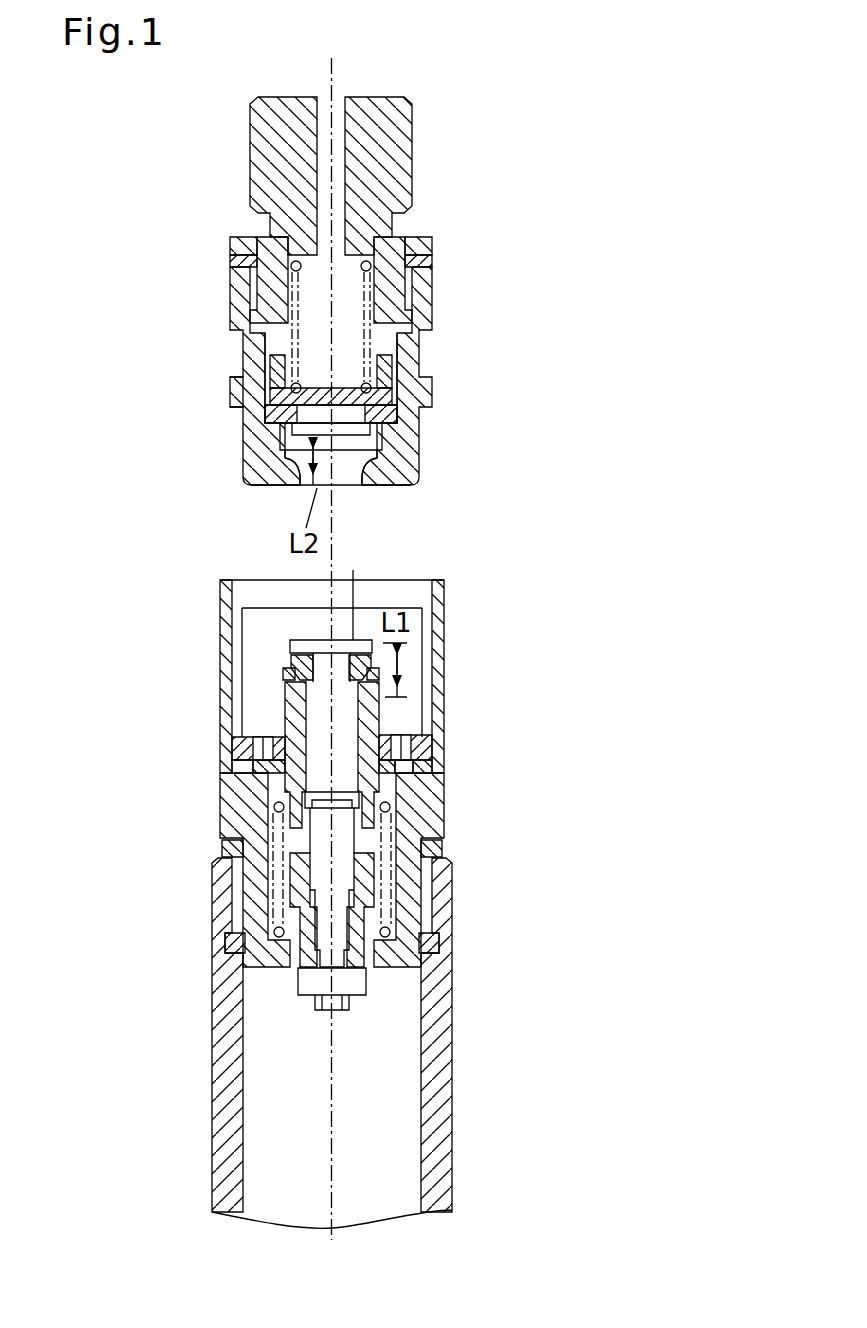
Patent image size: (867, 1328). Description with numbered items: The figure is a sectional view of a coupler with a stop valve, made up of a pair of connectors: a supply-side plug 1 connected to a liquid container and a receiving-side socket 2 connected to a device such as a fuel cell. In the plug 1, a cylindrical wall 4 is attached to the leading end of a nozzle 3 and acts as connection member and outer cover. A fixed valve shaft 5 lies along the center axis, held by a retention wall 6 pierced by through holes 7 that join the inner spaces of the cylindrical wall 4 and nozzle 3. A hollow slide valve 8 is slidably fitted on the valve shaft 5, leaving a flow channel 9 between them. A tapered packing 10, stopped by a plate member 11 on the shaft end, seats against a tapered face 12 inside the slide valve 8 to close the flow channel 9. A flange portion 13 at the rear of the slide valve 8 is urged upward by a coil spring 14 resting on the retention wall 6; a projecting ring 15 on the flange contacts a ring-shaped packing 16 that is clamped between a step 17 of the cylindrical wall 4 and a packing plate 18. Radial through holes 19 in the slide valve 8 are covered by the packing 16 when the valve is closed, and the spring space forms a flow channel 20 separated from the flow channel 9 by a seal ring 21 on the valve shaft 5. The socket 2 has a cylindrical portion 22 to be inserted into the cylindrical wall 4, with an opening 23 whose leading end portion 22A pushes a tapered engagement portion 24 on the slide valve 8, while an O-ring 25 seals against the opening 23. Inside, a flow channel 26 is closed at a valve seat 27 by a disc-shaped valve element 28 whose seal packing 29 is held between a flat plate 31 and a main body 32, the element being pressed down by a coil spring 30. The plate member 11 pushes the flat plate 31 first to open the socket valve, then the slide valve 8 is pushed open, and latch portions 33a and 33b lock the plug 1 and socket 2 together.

The connector (plug) 1 is at (195, 828).
The connector (socket) 2 is at (178, 200).
The nozzle 3 is at (453, 1045).
The cylindrical wall 4 is at (444, 613).
The valve shaft 5 is at (350, 1000).
The retention wall 6 is at (255, 958).
The through holes 7 is at (280, 975).
The slide valve 8 is at (380, 715).
The flow channel 9 is at (285, 717).
The packing 10 is at (372, 653).
The plate member 11 is at (353, 615).
The tapered face 12 is at (298, 640).
The flange portion 13 is at (385, 775).
The coil spring 14 is at (425, 938).
The projecting ring 15 is at (432, 760).
The ring-shaped packing 16 is at (233, 760).
The step 17 is at (232, 768).
The packing plate 18 is at (432, 743).
The through holes 19 is at (400, 772).
The flow channel 20 is at (300, 843).
The seal ring 21 is at (437, 848).
The cylindrical portion 22 is at (432, 298).
The leading end portion 22A is at (367, 488).
The opening 23 is at (300, 474).
The engagement portion 24 is at (283, 680).
The O-ring 25 is at (379, 677).
The flow channel 26 is at (280, 338).
The valve seat 27 is at (393, 412).
The valve element 28 is at (266, 398).
The seal packing 29 is at (285, 452).
The coil spring 30 is at (373, 262).
The flat plate 31 is at (382, 450).
The main body 32 is at (392, 384).
The latch portion 33a is at (420, 602).
The latch portion 33b is at (237, 372).